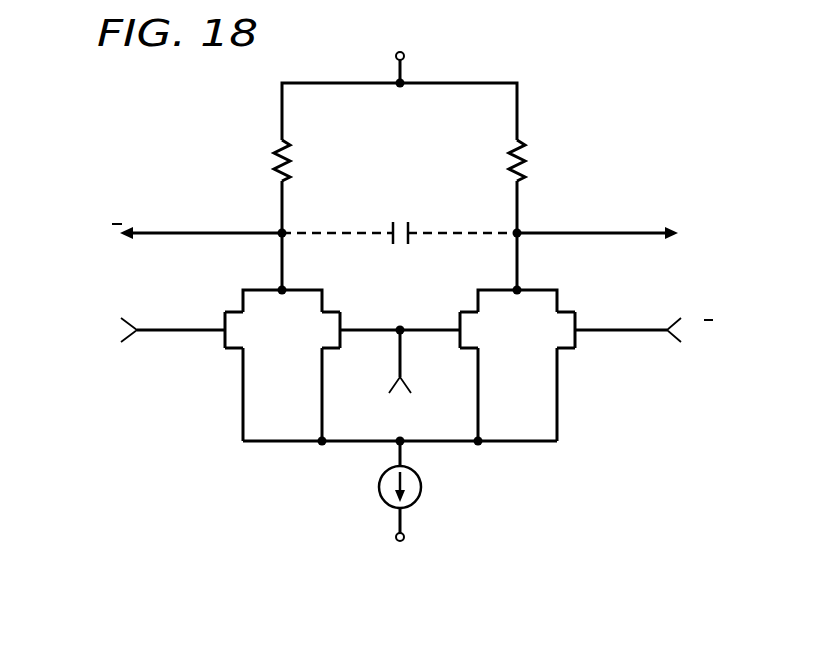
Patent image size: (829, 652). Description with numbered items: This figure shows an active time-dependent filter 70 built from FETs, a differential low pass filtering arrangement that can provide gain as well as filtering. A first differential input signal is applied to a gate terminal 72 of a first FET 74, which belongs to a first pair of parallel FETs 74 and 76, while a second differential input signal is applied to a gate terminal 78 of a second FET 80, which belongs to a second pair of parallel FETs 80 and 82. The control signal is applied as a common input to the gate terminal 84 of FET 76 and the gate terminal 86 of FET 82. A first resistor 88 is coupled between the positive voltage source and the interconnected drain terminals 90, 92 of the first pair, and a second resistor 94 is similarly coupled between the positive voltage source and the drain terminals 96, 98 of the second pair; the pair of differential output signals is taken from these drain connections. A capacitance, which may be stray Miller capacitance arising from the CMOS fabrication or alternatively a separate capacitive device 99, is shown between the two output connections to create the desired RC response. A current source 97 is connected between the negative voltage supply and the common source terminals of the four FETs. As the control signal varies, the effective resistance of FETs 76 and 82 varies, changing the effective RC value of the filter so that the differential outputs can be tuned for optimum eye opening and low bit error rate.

The active time-dependent filter 70 is at (636, 95).
The gate terminal 72 is at (223, 346).
The first FET 74 is at (232, 311).
The FET 76 is at (340, 346).
The gate terminal 78 is at (566, 311).
The second FET 80 is at (576, 346).
The FET 82 is at (459, 346).
The gate terminal 84 is at (329, 311).
The gate terminal 86 is at (470, 311).
The first resistor 88 is at (277, 151).
The drain terminal 90 is at (266, 289).
The drain terminal 92 is at (299, 289).
The second resistor 94 is at (521, 145).
The drain terminal 96 is at (501, 289).
The current source 97 is at (378, 487).
The drain terminal 98 is at (534, 289).
The capacitive device 99 is at (392, 222).